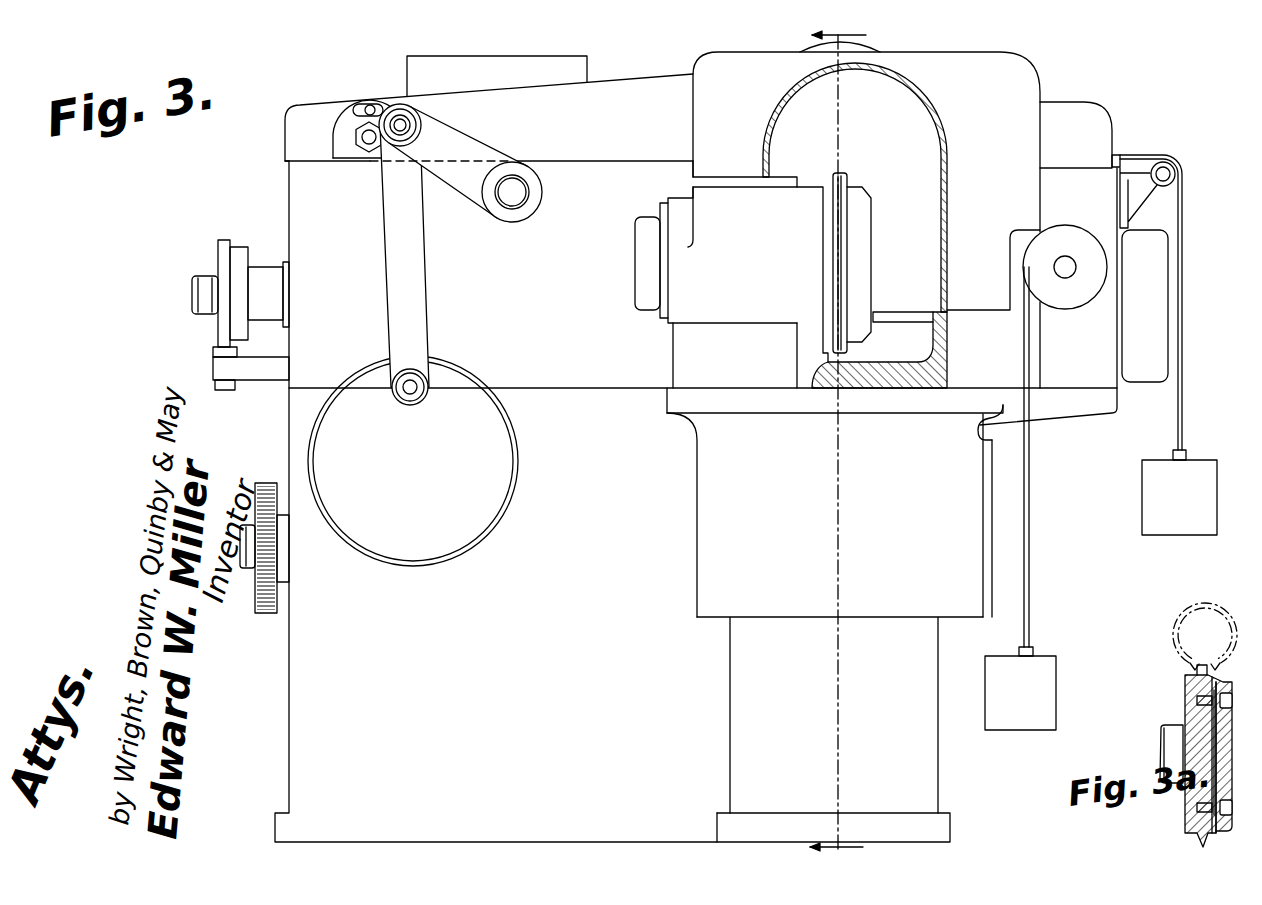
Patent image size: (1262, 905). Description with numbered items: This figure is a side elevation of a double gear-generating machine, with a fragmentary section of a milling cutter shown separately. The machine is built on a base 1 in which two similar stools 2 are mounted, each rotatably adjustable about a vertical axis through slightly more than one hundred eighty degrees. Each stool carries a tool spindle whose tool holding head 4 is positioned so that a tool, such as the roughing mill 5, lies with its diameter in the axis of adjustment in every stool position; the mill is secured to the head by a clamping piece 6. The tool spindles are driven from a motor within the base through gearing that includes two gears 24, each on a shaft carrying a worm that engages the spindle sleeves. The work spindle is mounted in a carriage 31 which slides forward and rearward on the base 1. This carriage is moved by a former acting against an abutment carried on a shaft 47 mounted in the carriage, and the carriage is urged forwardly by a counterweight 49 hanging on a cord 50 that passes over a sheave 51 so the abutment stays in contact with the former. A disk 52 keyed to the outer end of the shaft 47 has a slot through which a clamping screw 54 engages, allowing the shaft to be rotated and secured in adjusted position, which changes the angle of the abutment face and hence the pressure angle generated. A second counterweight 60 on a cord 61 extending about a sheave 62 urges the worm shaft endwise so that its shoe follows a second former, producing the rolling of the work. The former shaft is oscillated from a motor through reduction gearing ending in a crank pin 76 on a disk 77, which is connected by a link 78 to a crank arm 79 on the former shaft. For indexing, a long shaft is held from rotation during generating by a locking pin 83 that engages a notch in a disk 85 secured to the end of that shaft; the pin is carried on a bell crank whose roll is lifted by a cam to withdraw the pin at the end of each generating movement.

In FIG. 3, the base 1 is at (932, 772).
In FIG. 3, the stool 2 is at (950, 362).
In FIG. 3, the tool holding head 4 is at (824, 440).
In FIG. 3A, the tool holding head 4 is at (1184, 713).
In FIG. 3, the roughing mill 5 is at (846, 185).
In FIG. 3, the clamping piece 6 is at (866, 256).
In FIG. 3A, the clamping piece 6 is at (1225, 750).
In FIG. 3, the gear 24 is at (266, 483).
In FIG. 3, the carriage 31 is at (637, 78).
In FIG. 3, the shaft 47 is at (356, 137).
In FIG. 3, the counterweight 49 is at (1207, 462).
In FIG. 3, the cord 50 is at (1183, 310).
In FIG. 3, the sheave 51 is at (1180, 168).
In FIG. 3, the disk 52 is at (345, 117).
In FIG. 3, the clamping screw 54 is at (373, 103).
In FIG. 3, the counterweight 60 is at (1058, 680).
In FIG. 3, the cord 61 is at (1030, 480).
In FIG. 3, the sheave 62 is at (1074, 302).
In FIG. 3, the crank pin 76 is at (413, 404).
In FIG. 3, the disk 77 is at (507, 497).
In FIG. 3, the link 78 is at (420, 298).
In FIG. 3, the crank arm 79 is at (483, 150).
In FIG. 3, the locking pin 83 is at (288, 347).
In FIG. 3, the disk 85 is at (226, 240).